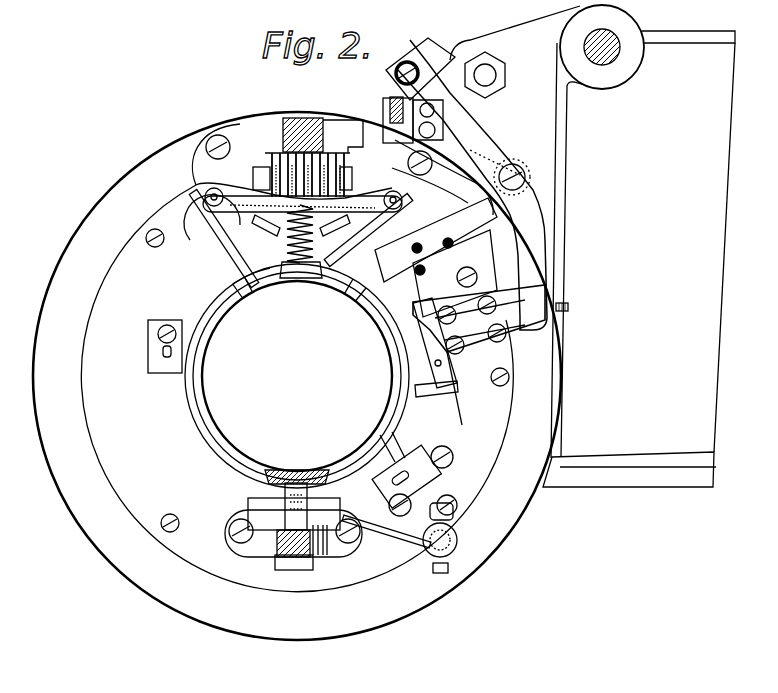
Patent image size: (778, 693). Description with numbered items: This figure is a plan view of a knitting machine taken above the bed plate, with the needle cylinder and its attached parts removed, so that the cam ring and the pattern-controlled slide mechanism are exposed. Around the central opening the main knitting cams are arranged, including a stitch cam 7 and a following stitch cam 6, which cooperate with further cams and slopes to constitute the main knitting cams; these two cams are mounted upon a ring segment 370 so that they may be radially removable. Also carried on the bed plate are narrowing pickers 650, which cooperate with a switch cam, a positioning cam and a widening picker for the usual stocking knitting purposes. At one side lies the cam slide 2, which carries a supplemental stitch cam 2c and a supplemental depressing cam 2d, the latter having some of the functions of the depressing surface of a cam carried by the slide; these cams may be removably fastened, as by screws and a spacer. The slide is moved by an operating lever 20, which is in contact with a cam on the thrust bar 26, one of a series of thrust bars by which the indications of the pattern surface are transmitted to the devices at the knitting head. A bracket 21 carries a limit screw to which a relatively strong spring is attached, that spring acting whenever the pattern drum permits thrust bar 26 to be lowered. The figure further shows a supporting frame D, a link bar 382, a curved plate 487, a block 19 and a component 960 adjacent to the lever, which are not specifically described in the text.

The cam slide 2 is at (507, 322).
The supplemental stitch cam 2c is at (425, 395).
The supplemental depressing cam 2d is at (423, 370).
The following stitch cam 6 is at (235, 295).
The stitch cam 7 is at (340, 290).
The bracket block 19 is at (505, 262).
The operating lever 20 is at (470, 120).
The bracket 21 is at (418, 45).
The thrust bar 26 is at (383, 105).
The ring segment 370 is at (172, 306).
The link bar 382 is at (463, 223).
The curved plate 487 is at (447, 167).
The narrowing pickers 650 is at (207, 260).
The electromagnet block 960 is at (262, 175).
The frame D is at (540, 393).